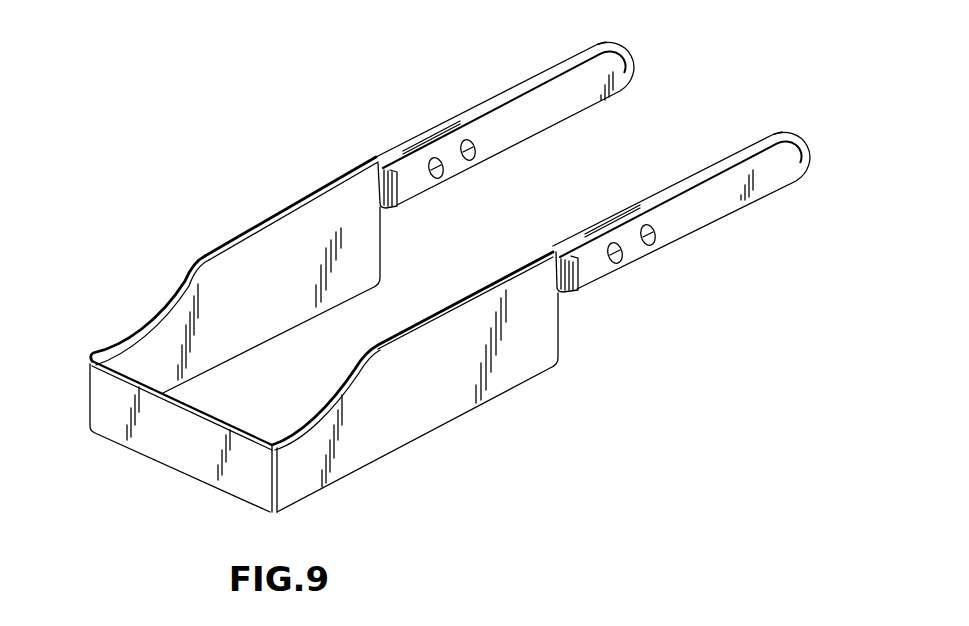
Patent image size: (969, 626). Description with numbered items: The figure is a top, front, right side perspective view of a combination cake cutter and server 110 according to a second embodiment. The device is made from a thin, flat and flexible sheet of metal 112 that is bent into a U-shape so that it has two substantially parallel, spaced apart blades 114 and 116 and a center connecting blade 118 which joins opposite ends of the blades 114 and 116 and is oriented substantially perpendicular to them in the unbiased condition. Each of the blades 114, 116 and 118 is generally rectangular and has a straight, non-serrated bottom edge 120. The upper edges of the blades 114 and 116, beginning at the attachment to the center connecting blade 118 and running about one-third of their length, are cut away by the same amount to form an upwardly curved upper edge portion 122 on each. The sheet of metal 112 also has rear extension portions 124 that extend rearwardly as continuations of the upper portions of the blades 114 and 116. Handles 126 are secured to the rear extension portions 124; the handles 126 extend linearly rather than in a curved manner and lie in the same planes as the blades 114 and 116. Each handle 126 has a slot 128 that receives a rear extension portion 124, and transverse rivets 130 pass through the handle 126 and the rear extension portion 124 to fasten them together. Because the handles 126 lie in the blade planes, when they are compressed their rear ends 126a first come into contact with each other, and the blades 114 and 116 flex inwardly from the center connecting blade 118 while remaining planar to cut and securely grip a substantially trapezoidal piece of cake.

The combination cake cutter and server 110 is at (79, 262).
The thin, flat and flexible sheet of metal 112 is at (141, 291).
The blade 114 is at (313, 213).
The blade 116 is at (498, 388).
The center connecting blade 118 is at (143, 443).
The bottom edge 120 is at (350, 475).
The upwardly curved upper edge portion 122 is at (110, 343).
The rear extension portion 124 is at (581, 230).
The handle 126 is at (520, 87).
The rear end of handle 126a is at (603, 47).
The slot 128 is at (613, 213).
The transverse rivet 130 is at (467, 158).